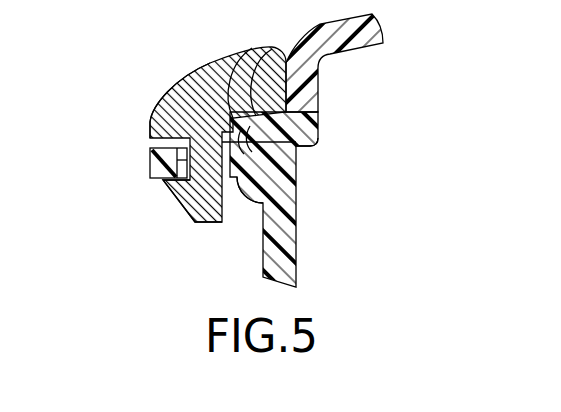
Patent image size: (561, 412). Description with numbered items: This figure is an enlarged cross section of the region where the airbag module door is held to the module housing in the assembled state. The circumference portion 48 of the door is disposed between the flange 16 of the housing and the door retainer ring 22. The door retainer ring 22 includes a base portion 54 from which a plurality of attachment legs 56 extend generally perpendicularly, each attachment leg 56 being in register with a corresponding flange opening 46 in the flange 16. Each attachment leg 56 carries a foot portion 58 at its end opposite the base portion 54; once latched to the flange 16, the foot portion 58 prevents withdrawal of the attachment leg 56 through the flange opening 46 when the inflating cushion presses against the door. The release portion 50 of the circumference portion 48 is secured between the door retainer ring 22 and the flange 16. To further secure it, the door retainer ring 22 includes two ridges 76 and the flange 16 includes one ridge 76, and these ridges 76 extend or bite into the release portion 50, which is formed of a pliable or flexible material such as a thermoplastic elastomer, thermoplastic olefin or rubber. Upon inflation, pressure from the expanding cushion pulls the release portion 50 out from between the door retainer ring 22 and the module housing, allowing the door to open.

The door retainer ring 22 is at (172, 84).
The base portion 54 is at (150, 132).
The flange 16 is at (150, 162).
The attachment leg 56 is at (163, 183).
The foot portion 58 is at (184, 205).
The ridge 76 is at (240, 94).
The flange opening 46 is at (265, 204).
The circumference portion 48 is at (296, 153).
The release portion 50 is at (278, 164).